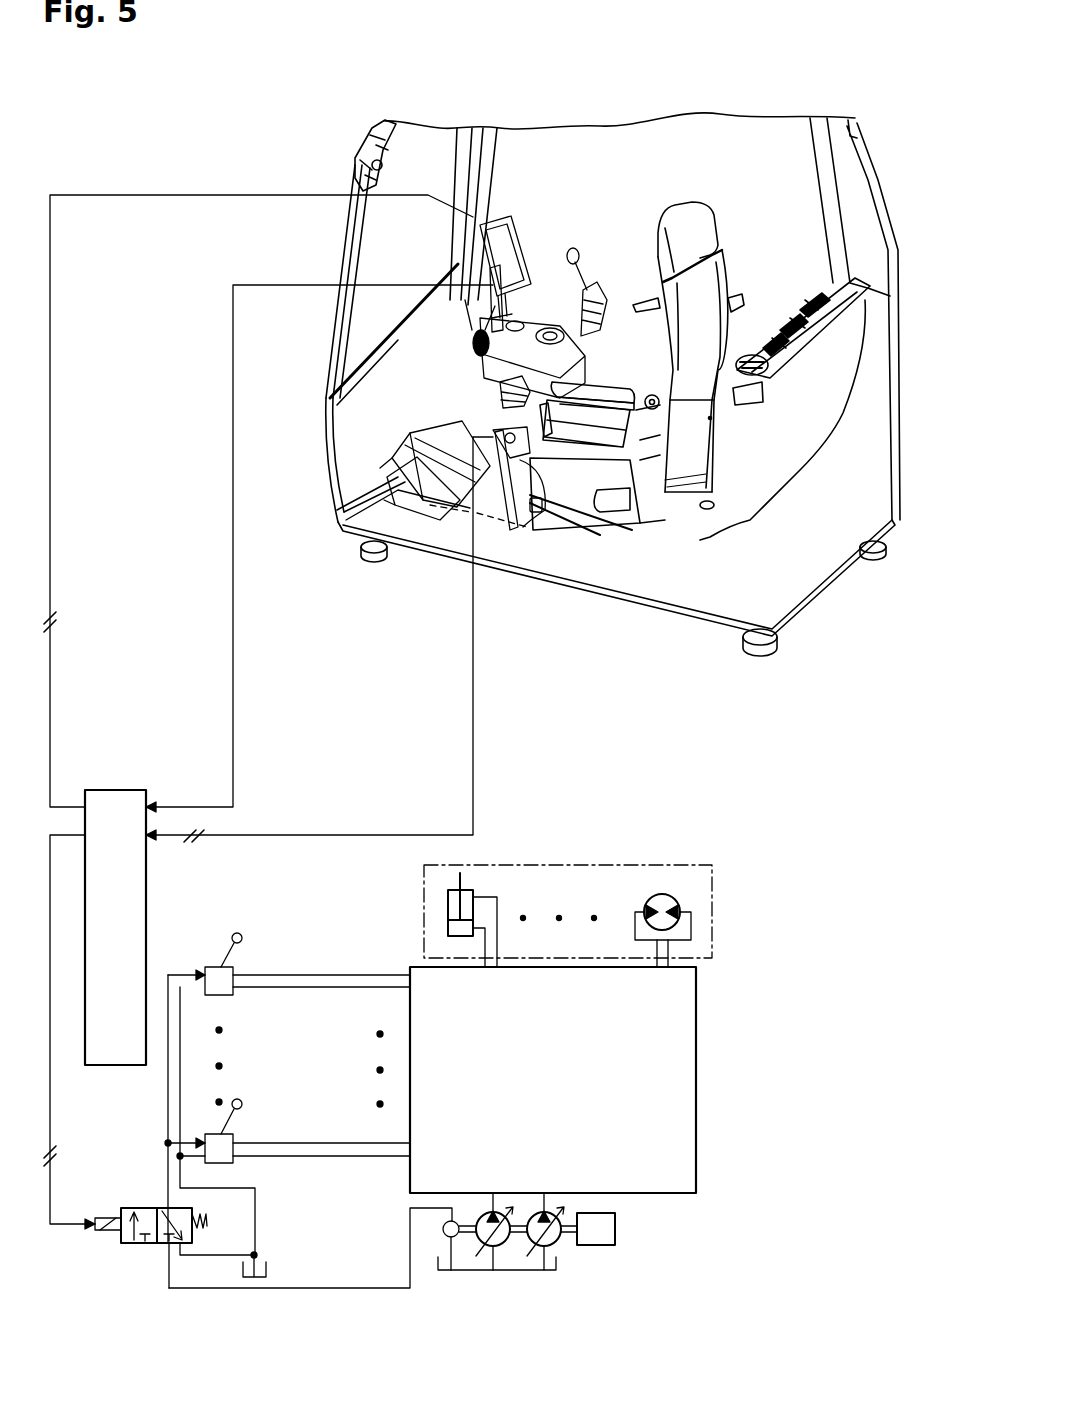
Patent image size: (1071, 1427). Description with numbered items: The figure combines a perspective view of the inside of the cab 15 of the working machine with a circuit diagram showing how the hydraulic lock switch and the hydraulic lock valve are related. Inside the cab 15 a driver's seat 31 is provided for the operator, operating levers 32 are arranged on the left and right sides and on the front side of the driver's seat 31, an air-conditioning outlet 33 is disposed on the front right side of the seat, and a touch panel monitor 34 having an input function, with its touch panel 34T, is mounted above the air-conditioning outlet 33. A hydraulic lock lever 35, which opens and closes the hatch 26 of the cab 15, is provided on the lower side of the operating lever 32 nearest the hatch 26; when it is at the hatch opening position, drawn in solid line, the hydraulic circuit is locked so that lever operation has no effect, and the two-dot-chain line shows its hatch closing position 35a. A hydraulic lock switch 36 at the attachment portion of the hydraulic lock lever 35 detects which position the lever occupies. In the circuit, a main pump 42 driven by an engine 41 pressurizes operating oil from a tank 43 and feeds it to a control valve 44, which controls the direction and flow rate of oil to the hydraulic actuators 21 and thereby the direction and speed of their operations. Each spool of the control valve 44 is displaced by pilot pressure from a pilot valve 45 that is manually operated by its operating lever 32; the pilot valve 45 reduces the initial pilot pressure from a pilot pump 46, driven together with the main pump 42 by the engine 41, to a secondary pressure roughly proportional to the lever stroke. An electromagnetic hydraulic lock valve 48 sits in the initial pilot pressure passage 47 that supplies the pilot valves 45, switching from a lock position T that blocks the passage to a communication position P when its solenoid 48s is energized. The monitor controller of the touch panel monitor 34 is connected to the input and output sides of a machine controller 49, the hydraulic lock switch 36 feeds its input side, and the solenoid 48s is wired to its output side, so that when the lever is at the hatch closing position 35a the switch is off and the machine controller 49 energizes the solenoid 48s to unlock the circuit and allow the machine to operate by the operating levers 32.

The cab 15 is at (861, 120).
The hydraulic actuators 21 is at (712, 891).
The hatch 26 is at (425, 524).
The driver's seat 31 is at (733, 258).
The operating levers 32 is at (586, 288).
The air-conditioning outlet 33 is at (470, 338).
The touch panel monitor 34 is at (482, 254).
The touch panel 34T is at (505, 250).
The hydraulic lock lever 35 is at (502, 490).
The hatch closing position 35a is at (450, 416).
The hydraulic lock switch 36 is at (540, 500).
The engine 41 is at (597, 1247).
The main pump 42 is at (497, 1248).
The tank 43 is at (467, 1272).
The control valve 44 is at (697, 1152).
The pilot valve 45 is at (220, 988).
The pilot pump 46 is at (444, 1238).
The initial pilot pressure passage 47 is at (307, 1290).
The hydraulic lock valve 48 is at (148, 1250).
The solenoid 48s is at (92, 1233).
The machine controller 49 is at (112, 790).